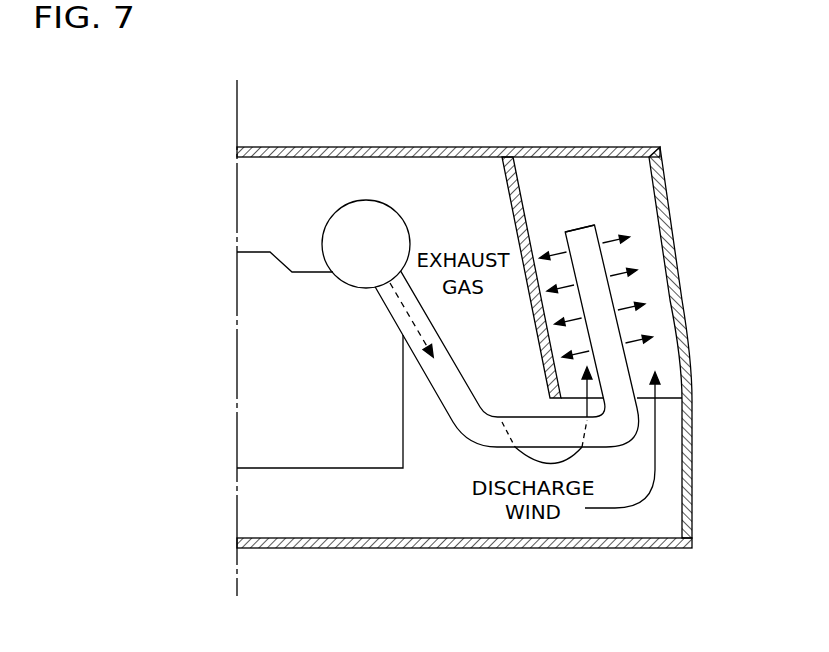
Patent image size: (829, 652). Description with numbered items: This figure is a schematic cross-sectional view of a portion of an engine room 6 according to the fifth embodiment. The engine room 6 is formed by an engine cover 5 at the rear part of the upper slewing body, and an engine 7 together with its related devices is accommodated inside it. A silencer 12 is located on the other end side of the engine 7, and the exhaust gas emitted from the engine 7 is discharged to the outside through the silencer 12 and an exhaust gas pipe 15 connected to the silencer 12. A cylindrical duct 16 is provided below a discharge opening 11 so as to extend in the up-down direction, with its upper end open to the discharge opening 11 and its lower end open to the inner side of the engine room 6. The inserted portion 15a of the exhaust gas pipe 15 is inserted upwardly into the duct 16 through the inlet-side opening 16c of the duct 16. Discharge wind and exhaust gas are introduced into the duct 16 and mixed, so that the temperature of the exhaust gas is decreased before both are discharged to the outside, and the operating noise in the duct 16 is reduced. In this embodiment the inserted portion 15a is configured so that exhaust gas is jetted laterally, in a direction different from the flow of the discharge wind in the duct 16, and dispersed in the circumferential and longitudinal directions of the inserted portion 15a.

The engine cover 5 is at (364, 146).
The engine room 6 is at (374, 527).
The engine 7 is at (254, 252).
The discharge opening 11 is at (568, 146).
The silencer 12 is at (350, 203).
The exhaust gas pipe 15 is at (450, 418).
The inserted portion 15a is at (617, 292).
The duct 16 is at (530, 300).
The inlet-side opening 16c is at (646, 396).